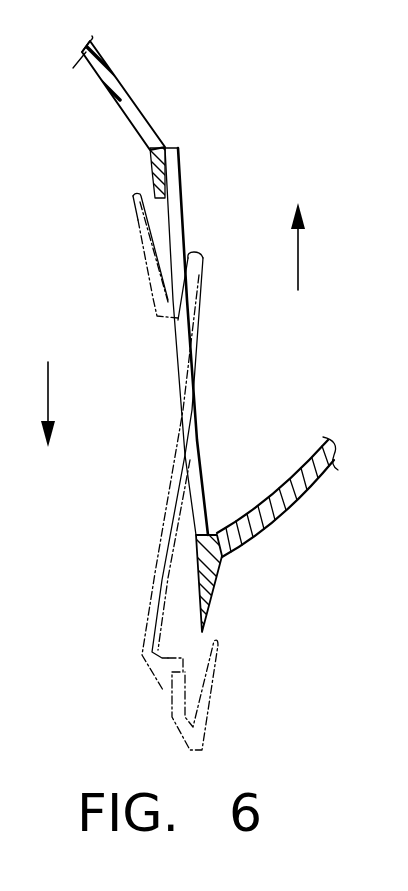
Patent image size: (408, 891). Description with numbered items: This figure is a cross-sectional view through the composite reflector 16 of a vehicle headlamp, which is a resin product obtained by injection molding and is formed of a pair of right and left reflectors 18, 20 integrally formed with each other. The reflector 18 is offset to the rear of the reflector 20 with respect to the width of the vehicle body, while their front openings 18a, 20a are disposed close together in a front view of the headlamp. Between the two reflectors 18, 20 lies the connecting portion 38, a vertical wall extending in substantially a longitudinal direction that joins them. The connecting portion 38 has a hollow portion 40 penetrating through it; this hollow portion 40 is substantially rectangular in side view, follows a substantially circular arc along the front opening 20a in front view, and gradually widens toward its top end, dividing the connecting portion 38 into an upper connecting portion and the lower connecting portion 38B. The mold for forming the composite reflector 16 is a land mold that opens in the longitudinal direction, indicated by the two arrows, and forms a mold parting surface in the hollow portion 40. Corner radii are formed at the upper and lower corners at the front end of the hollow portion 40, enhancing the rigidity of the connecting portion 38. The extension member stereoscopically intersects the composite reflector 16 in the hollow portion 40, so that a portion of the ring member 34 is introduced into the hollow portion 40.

The composite reflector 16 is at (244, 62).
The reflector 18 is at (133, 73).
The front opening 18a is at (150, 175).
The connecting portion 38 is at (192, 204).
The lower connecting portion 38B is at (184, 228).
The ring member 34 is at (138, 265).
The hollow portion 40 is at (224, 340).
The reflector 20 is at (283, 458).
The front opening 20a is at (213, 587).